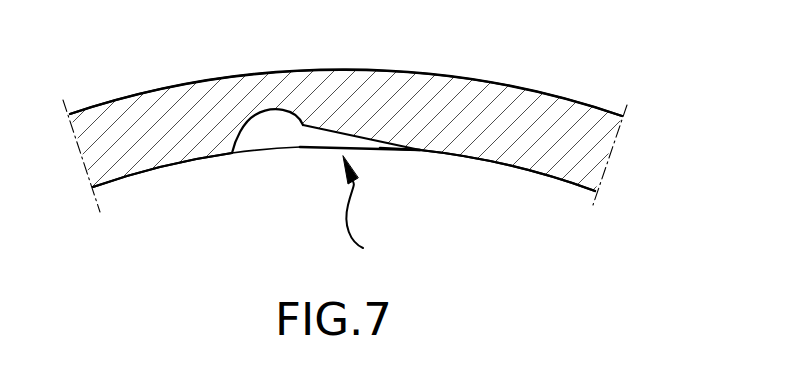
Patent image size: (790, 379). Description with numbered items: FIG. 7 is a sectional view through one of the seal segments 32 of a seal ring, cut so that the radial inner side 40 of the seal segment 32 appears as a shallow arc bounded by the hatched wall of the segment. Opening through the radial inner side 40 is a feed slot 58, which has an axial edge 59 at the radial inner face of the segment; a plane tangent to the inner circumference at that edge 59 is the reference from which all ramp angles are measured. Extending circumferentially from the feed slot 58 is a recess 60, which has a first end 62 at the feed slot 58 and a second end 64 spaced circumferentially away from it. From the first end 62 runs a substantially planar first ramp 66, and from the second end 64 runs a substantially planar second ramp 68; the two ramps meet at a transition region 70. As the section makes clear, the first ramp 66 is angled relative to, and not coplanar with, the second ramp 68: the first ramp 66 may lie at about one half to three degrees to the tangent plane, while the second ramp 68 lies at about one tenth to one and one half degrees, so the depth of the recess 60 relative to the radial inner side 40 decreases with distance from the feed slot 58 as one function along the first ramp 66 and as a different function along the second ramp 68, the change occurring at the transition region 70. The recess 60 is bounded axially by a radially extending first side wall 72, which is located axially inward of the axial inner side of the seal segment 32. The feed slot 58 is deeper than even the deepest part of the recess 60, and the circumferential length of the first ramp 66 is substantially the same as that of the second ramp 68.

The seal segment 32 is at (203, 115).
The radial inner side 40 is at (531, 170).
The feed slot 58 is at (253, 140).
The axial edge 59 is at (235, 152).
The recess 60 is at (367, 210).
The first end 62 is at (307, 132).
The second end 64 is at (443, 157).
The first ramp 66 is at (323, 132).
The second ramp 68 is at (385, 147).
The transition region 70 is at (366, 141).
The first side wall 72 is at (314, 129).